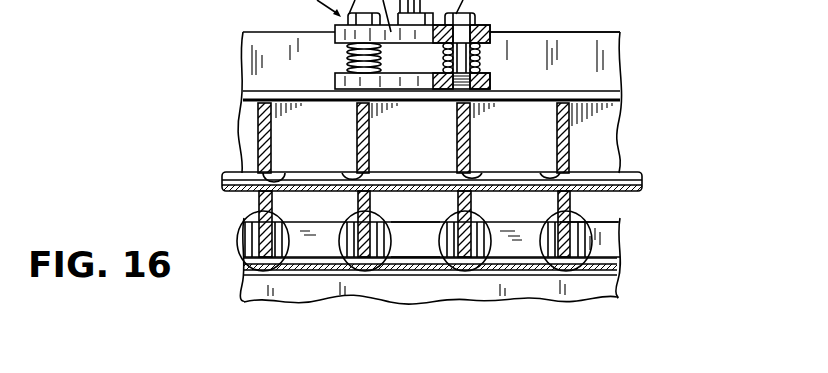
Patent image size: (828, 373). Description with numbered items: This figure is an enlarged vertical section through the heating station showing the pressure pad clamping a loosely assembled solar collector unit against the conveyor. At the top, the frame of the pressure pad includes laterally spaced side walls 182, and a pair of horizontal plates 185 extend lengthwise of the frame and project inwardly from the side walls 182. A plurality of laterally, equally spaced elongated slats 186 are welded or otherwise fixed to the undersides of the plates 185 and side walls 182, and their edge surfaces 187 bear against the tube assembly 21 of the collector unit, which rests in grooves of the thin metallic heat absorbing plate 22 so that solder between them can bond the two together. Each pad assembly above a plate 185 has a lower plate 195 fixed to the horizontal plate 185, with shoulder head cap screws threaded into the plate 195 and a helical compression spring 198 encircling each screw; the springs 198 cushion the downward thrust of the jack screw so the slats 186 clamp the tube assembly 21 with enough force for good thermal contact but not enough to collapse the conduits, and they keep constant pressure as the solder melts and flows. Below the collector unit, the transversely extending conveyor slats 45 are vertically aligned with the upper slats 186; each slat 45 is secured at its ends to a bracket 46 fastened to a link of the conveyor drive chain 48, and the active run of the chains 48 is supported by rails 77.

The side walls 182 is at (592, 32).
The horizontal plates 185 is at (603, 88).
The slats 186 is at (357, 113).
The edge surfaces 187 is at (347, 175).
The lower plate 195 is at (407, 89).
The helical compression spring 198 is at (352, 60).
The tube assembly 21 is at (645, 163).
The heat absorbing plate 22 is at (423, 192).
The slats 45 is at (258, 202).
The bracket 46 is at (343, 240).
The conveyor drive chain 48 is at (600, 209).
The rails 77 is at (605, 285).